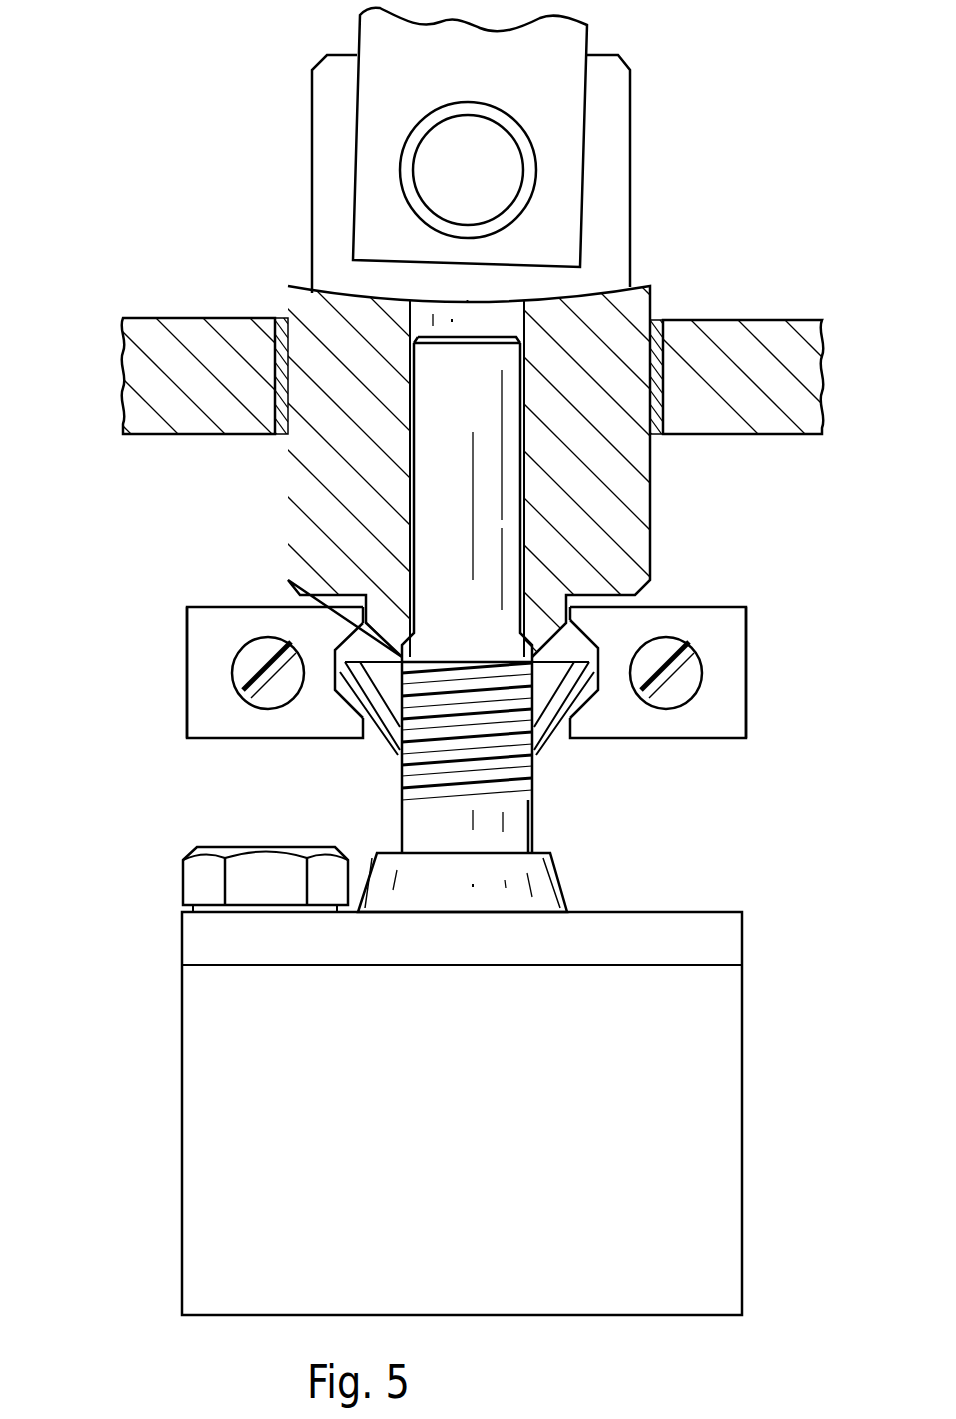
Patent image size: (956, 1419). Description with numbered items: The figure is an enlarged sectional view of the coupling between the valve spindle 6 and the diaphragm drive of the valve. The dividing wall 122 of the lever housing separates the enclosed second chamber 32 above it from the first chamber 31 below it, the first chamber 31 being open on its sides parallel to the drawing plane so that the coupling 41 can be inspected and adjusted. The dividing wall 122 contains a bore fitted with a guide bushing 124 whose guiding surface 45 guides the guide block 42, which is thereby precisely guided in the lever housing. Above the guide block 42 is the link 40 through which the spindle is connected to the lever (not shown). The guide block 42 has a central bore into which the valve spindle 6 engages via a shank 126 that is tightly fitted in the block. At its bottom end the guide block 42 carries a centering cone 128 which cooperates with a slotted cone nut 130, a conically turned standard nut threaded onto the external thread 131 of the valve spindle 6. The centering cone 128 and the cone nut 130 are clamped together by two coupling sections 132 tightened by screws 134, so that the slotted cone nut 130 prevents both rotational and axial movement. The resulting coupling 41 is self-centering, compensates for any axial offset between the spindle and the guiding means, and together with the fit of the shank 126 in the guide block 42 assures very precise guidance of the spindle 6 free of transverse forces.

The valve spindle 6 is at (417, 818).
The first chamber 31 is at (178, 497).
The second chamber 32 is at (178, 192).
The link 40 is at (372, 110).
The coupling 41 is at (199, 607).
The guide block 42 is at (307, 548).
The guiding surface 45 is at (287, 361).
The dividing wall 122 is at (735, 337).
The guide bushing 124 is at (657, 440).
The shank 126 is at (490, 509).
The centering cone 128 is at (612, 620).
The cone nut 130 is at (542, 717).
The external thread 131 is at (532, 787).
The coupling sections 132 is at (200, 628).
The screws 134 is at (240, 670).